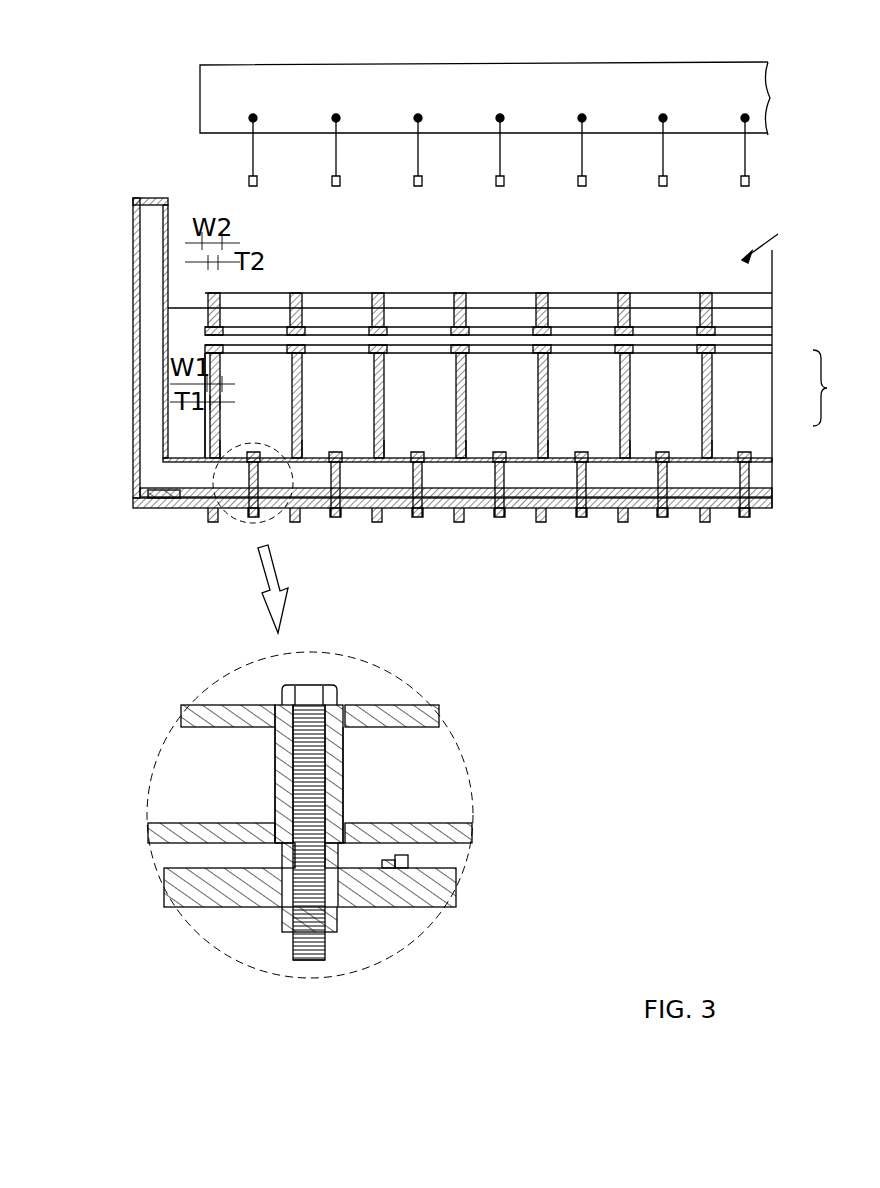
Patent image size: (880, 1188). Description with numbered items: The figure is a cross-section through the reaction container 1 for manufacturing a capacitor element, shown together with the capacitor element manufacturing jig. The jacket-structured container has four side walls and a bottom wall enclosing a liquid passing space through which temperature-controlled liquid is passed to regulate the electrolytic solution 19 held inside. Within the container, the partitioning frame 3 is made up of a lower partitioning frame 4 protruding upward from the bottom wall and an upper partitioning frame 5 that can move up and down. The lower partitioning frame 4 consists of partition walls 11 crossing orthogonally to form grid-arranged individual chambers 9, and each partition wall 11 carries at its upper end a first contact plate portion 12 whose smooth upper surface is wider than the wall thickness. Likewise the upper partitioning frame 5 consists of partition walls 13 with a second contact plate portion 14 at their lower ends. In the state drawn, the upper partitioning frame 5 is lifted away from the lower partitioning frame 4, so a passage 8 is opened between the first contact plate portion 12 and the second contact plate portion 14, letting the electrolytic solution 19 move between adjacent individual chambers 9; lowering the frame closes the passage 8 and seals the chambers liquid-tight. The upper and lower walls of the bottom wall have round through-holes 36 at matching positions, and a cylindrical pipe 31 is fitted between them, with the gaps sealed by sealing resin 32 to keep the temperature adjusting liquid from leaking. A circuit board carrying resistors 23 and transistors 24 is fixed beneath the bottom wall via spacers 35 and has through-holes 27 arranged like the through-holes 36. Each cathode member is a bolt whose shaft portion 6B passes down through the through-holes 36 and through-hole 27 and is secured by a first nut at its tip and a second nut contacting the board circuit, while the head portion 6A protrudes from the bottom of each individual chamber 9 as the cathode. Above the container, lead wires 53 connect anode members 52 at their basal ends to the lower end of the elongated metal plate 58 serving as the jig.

The reaction container for manufacturing a capacitor element 1 is at (770, 234).
The partitioning frame 3 is at (827, 388).
The lower partitioning frame 4 is at (714, 396).
The upper partitioning frame 5 is at (712, 316).
The head portion of the bolt 6A is at (321, 690).
The shaft portion of the bolt 6B is at (290, 855).
The passage 8 is at (404, 348).
The individual chamber 9 is at (267, 416).
The partition wall 11 is at (222, 418).
The first contact plate portion 12 is at (222, 358).
The partition wall 13 is at (218, 320).
The second contact plate portion 14 is at (305, 331).
The electrolytic solution 19 is at (755, 432).
The resistor 23 is at (410, 862).
The transistor 24 is at (398, 858).
The through-hole of the circuit board 27 is at (322, 935).
The pipe 31 is at (200, 716).
The sealing resin 32 is at (280, 705).
The spacer 35 is at (145, 497).
The through-hole of the bottom wall 36 is at (335, 712).
The conductive member (anode member) 52 is at (248, 182).
The lead wire 53 is at (251, 152).
The elongated metal plate (capacitor element manufacturing jig) 58 is at (466, 90).